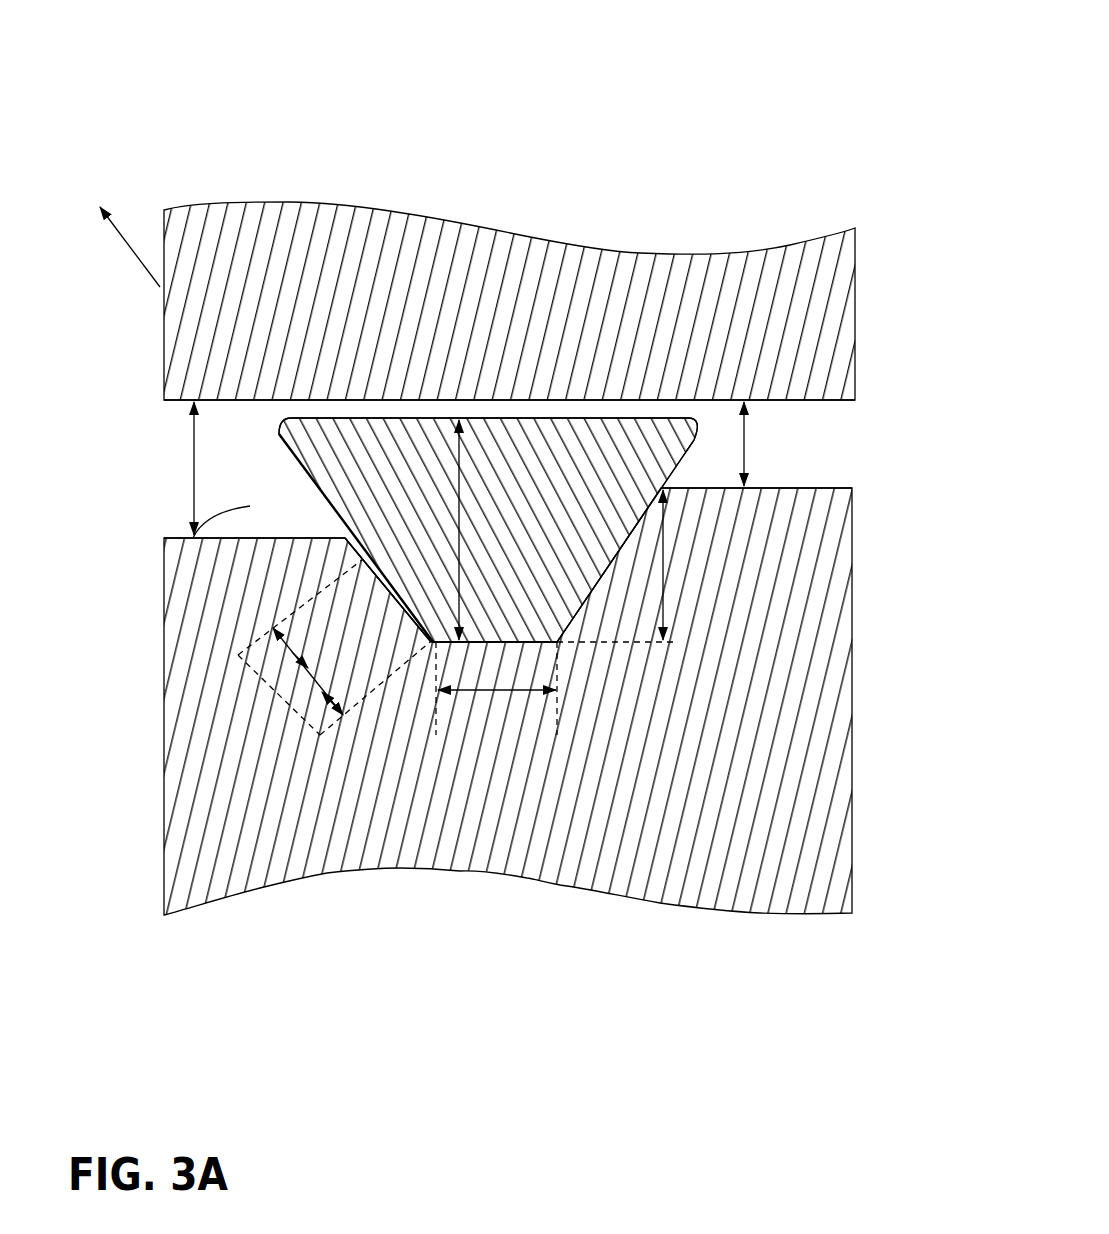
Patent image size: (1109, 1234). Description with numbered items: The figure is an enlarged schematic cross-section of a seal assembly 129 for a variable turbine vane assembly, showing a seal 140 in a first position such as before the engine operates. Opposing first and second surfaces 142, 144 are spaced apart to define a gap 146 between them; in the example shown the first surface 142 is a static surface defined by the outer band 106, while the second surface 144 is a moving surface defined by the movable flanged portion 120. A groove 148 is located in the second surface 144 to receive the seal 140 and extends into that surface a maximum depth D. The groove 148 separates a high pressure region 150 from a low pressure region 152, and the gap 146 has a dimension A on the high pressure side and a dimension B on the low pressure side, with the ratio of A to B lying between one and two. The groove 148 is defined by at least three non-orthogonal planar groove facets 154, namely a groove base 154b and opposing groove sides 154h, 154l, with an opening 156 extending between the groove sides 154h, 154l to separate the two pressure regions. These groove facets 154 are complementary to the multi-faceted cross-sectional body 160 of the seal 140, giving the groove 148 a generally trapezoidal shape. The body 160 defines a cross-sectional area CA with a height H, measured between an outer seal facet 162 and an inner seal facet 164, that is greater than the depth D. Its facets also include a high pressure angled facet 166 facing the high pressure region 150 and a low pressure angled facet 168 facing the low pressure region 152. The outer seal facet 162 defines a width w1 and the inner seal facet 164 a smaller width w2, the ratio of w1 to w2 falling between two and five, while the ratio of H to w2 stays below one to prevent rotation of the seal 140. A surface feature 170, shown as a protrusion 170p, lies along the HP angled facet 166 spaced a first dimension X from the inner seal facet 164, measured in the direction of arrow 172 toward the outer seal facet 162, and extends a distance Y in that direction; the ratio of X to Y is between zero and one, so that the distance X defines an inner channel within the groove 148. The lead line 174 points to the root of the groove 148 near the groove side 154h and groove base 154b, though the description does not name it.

The seal assembly 129 is at (332, 36).
The outer band 106 is at (695, 400).
The movable flanged portion 120 is at (518, 832).
The seal 140 is at (609, 446).
The first surface 142 is at (832, 410).
The second surface 144 is at (192, 508).
The gap 146 is at (845, 461).
The groove 148 is at (343, 528).
The high pressure region 150 is at (171, 450).
The low pressure region 152 is at (956, 436).
The planar groove facets 154 is at (367, 537).
The groove base 154b is at (498, 641).
The groove side 154h is at (433, 641).
The groove side 154l is at (592, 565).
The opening 156 is at (567, 577).
The multi-faceted cross-sectional body 160 is at (516, 502).
The outer seal facet 162 is at (592, 468).
The inner seal facet 164 is at (540, 650).
The high pressure angled facet 166 is at (280, 447).
The low pressure angled facet 168 is at (690, 445).
The surface feature 170 is at (372, 576).
The protrusion 170p is at (370, 578).
The arrow 172 is at (128, 237).
The root 174 is at (428, 650).
The cross-sectional area CA is at (608, 447).
The height H is at (458, 480).
The width w1 is at (324, 420).
The width w2 is at (454, 693).
The first dimension X is at (336, 691).
The distance Y is at (334, 647).
The dimension A is at (192, 473).
The dimension B is at (748, 434).
The maximum depth D is at (666, 601).